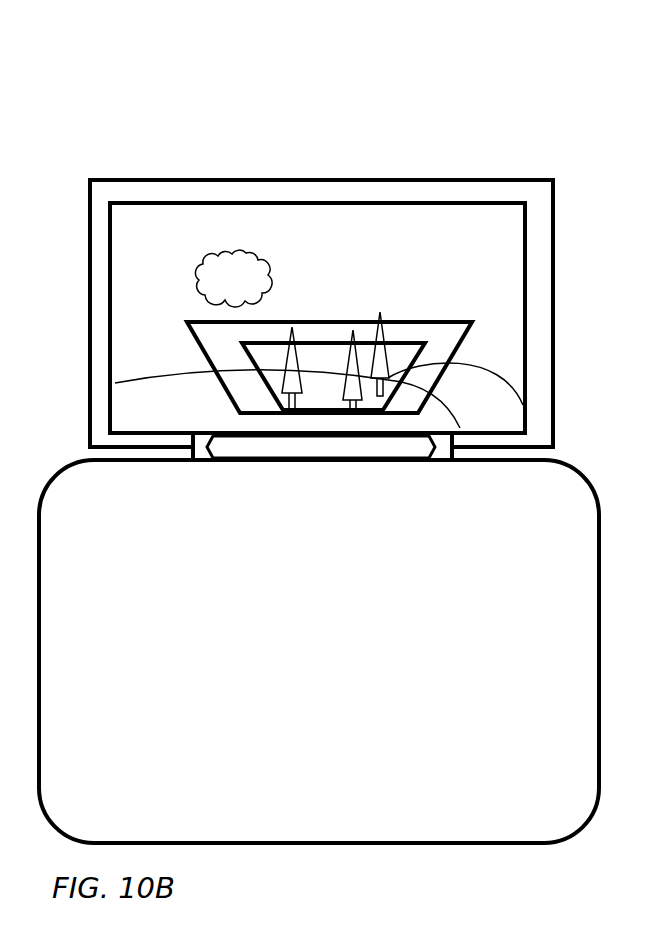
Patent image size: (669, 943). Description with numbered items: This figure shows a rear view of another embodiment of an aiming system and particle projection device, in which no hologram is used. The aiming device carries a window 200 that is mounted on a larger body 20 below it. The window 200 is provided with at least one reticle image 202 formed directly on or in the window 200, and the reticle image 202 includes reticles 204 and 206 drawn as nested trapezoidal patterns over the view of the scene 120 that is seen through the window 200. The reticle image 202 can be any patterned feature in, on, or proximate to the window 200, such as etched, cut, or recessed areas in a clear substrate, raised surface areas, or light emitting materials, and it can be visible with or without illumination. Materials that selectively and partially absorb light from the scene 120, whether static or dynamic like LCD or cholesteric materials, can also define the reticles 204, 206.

The base unit 20 is at (319, 651).
The scene 120 is at (142, 207).
The window 200 is at (243, 207).
The reticle image 202 is at (482, 279).
The reticle 204 is at (418, 322).
The reticle 206 is at (400, 376).